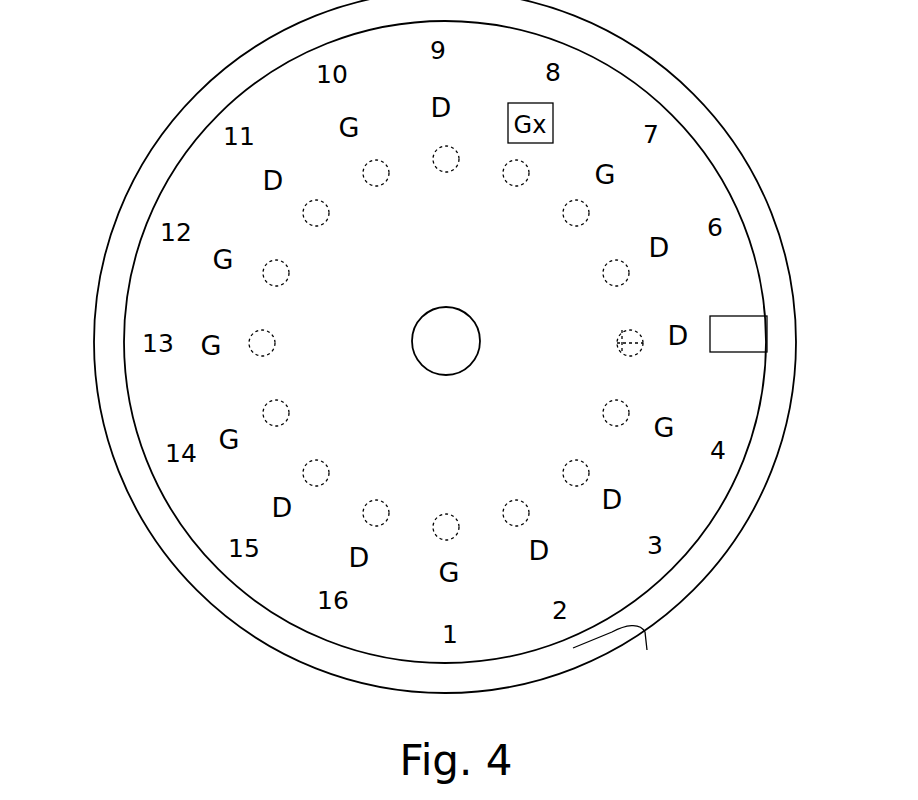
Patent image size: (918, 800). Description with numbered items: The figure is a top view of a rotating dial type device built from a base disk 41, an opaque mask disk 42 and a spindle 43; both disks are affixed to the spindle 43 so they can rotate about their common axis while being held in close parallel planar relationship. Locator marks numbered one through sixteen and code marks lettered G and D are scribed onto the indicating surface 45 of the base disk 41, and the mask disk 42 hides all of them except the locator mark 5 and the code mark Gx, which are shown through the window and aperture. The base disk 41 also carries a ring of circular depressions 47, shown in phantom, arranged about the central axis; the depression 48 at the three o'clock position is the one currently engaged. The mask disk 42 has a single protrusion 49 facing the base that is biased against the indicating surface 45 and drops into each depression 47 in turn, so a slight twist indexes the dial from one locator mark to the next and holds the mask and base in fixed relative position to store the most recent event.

The base disk 41 is at (277, 633).
The mask disk 42 is at (217, 542).
The spindle 43 is at (456, 344).
The indicating surface 45 is at (621, 651).
The circular depressions 47 is at (562, 212).
The depression 48 is at (638, 346).
The protrusion 49 is at (629, 332).
The locator mark 5 is at (135, 345).